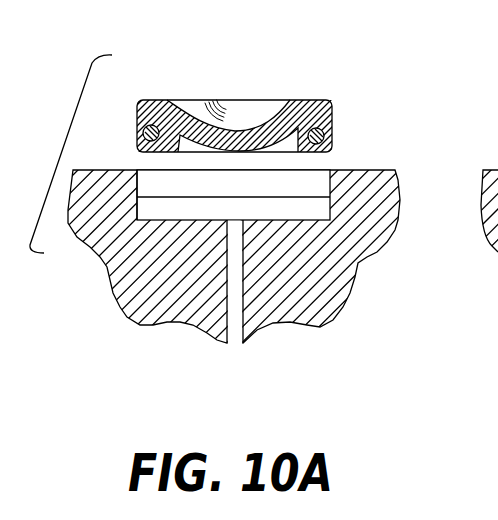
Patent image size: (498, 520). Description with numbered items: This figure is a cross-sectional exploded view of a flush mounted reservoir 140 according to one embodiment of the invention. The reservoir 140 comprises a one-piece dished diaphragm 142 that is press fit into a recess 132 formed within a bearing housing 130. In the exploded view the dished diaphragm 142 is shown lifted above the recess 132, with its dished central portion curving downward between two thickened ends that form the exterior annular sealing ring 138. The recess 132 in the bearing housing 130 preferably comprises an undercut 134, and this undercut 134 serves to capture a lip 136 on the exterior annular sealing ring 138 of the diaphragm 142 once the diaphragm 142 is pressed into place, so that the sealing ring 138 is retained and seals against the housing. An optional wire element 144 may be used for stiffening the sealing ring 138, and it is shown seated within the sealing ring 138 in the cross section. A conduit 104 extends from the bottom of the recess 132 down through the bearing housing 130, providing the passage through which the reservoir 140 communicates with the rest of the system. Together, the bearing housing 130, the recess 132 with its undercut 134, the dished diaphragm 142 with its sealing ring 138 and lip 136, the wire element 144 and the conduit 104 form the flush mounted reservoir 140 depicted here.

The conduit 104 is at (238, 345).
The bearing housing 130 is at (368, 250).
The recess 132 is at (305, 188).
The undercut 134 is at (138, 203).
The lip 136 is at (140, 130).
The exterior annular sealing ring 138 is at (332, 117).
The reservoir 140 is at (74, 120).
The one-piece dished diaphragm 142 is at (277, 96).
The wire element 144 is at (330, 134).